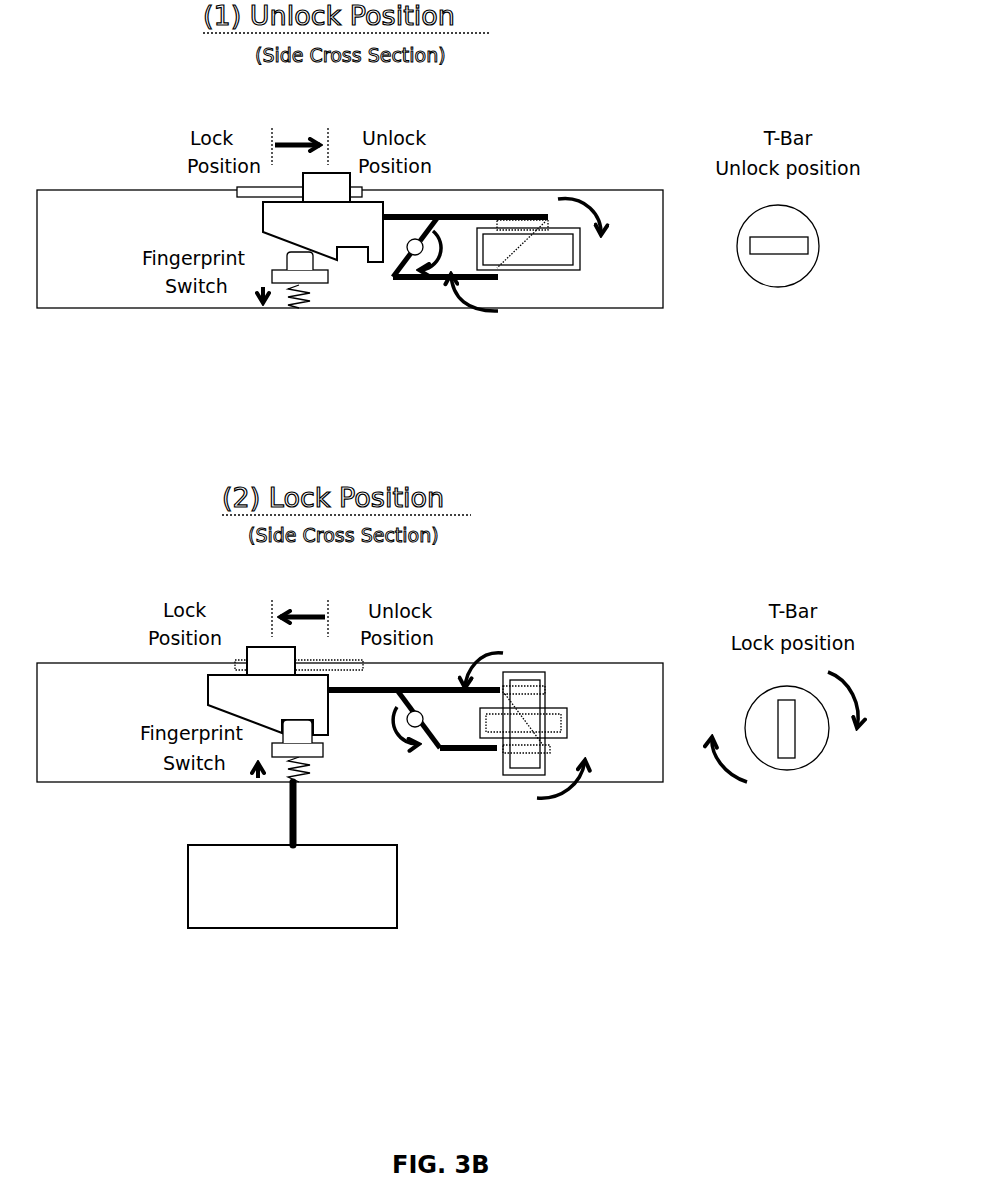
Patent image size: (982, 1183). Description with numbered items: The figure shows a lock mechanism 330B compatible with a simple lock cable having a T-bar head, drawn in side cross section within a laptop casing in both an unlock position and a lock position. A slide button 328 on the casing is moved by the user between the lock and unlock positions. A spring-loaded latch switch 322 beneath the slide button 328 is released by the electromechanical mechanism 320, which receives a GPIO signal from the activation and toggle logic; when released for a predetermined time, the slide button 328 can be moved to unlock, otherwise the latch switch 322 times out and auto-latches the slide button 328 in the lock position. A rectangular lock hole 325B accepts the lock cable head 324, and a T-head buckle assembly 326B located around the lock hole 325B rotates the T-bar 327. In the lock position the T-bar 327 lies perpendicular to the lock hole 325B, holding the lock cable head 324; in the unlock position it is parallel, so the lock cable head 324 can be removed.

The electromechanical mechanism 320 is at (187, 917).
The latch switch 322 is at (312, 288).
The lock cable head 324 is at (822, 235).
The lock hole 325B is at (497, 252).
The T-head buckle assembly 326B is at (561, 527).
The T-bar 327 is at (778, 237).
The slide button 328 is at (348, 172).
The lock mechanism 330B is at (125, 277).